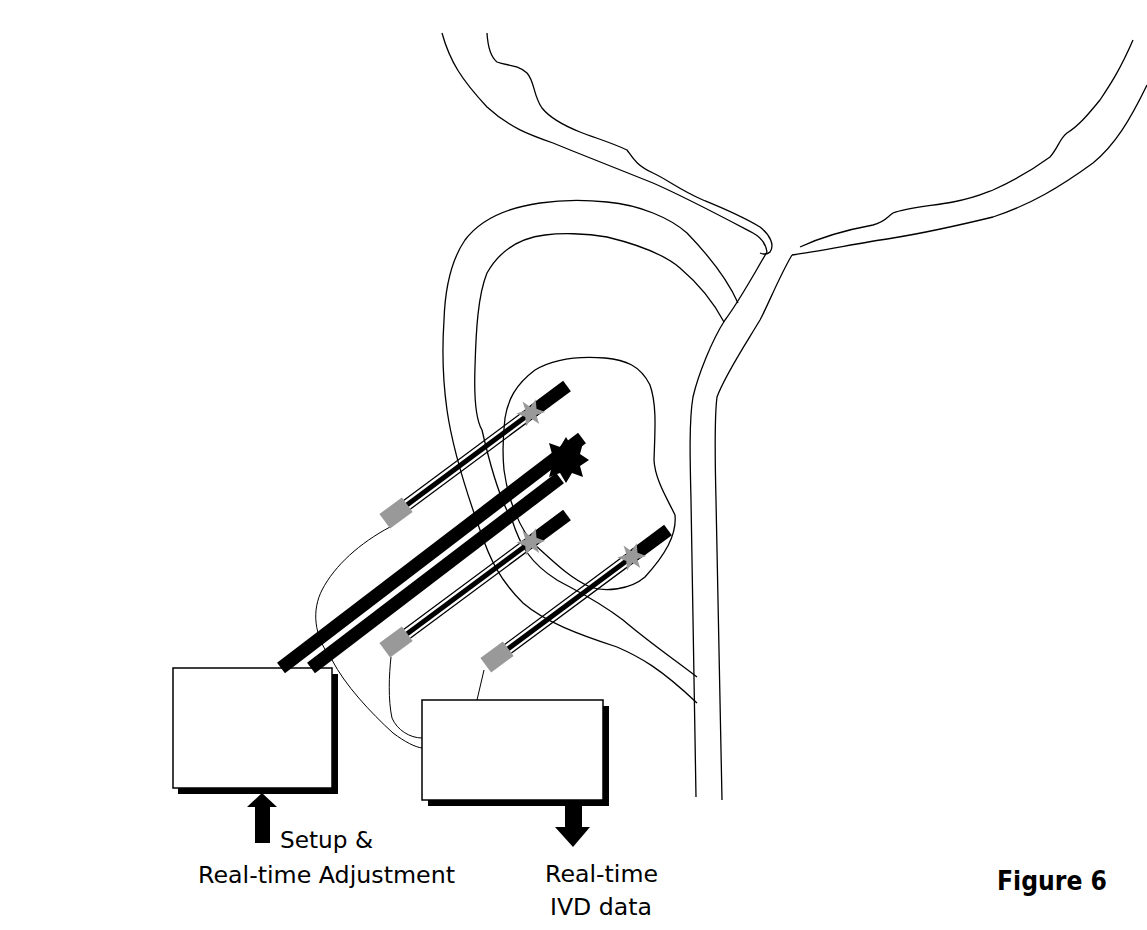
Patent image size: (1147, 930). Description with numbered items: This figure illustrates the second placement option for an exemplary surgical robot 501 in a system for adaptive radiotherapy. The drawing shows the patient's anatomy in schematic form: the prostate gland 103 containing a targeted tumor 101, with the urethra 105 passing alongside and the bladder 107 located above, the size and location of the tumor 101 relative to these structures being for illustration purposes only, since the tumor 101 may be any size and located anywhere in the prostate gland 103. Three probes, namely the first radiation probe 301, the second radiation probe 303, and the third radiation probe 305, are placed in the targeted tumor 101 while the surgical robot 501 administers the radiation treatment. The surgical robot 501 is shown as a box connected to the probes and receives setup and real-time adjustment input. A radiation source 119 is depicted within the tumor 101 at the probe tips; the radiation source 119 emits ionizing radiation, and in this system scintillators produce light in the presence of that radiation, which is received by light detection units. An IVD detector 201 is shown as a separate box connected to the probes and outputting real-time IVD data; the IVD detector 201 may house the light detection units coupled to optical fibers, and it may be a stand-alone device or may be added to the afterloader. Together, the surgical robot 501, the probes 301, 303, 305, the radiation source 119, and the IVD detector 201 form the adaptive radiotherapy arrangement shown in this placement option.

The tumor 101 is at (531, 370).
The prostate gland 103 is at (590, 451).
The urethra 105 is at (742, 300).
The bladder 107 is at (794, 144).
The radiation source 119 is at (584, 458).
The IVD detector 201 is at (462, 687).
The radiation probe #1 301 is at (578, 388).
The radiation probe #2 303 is at (573, 512).
The radiation probe #3 305 is at (668, 528).
The surgical robot 501 is at (377, 640).